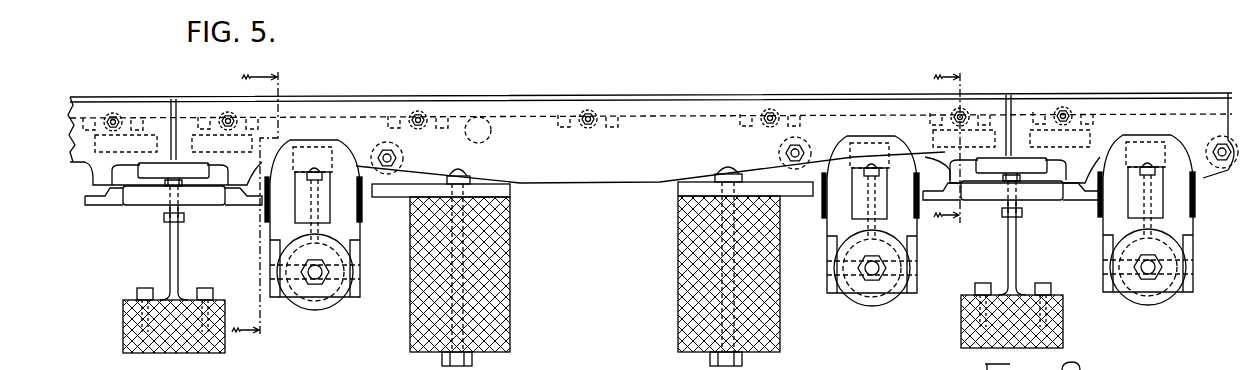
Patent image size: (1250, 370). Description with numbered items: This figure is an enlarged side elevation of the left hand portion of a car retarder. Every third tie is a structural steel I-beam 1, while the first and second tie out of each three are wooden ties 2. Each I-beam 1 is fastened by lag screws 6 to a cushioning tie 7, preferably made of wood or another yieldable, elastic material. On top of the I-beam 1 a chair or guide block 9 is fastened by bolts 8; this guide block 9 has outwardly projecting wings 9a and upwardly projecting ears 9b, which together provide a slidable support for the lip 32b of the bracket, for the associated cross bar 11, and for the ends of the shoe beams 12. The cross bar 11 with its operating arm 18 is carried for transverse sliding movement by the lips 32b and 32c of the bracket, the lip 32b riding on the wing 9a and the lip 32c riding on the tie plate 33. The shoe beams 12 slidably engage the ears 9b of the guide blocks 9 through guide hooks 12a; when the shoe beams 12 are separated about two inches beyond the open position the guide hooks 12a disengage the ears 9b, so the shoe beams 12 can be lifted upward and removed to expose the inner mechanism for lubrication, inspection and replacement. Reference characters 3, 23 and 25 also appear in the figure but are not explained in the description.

The structural steel I-beam 1 is at (170, 250).
The wooden tie 2 is at (510, 274).
The section line 3- 3 is at (260, 206).
The lag screw 6 is at (134, 284).
The cushioning tie 7 is at (123, 335).
The bolt 8 is at (208, 172).
The guide block 9 is at (145, 193).
The outwardly projecting wing 9a is at (98, 205).
The upwardly projecting ear 9b is at (140, 167).
The cross bar 11 is at (332, 222).
The shoe beam 12 is at (570, 172).
The guide hook 12a is at (453, 122).
The operating arm 18 is at (350, 246).
The roller 23 is at (320, 282).
The adjusting bolt 25 is at (315, 171).
The lip of bracket 32b is at (262, 200).
The lip of bracket 32c is at (365, 192).
The tie plate 33 is at (509, 190).